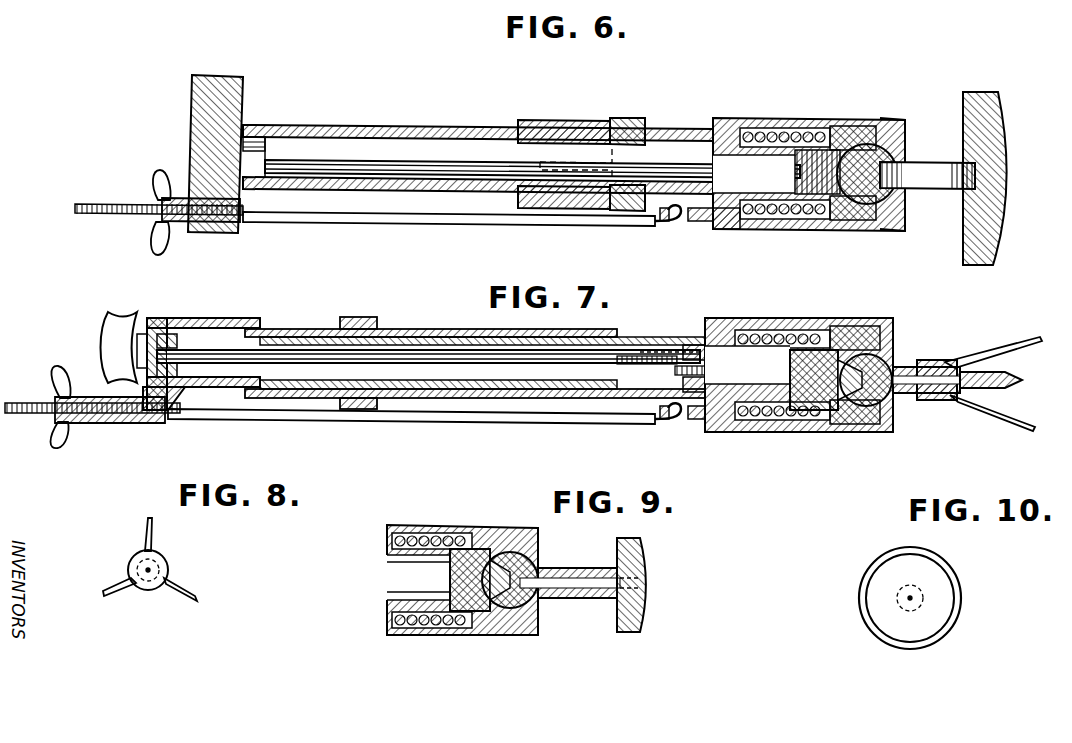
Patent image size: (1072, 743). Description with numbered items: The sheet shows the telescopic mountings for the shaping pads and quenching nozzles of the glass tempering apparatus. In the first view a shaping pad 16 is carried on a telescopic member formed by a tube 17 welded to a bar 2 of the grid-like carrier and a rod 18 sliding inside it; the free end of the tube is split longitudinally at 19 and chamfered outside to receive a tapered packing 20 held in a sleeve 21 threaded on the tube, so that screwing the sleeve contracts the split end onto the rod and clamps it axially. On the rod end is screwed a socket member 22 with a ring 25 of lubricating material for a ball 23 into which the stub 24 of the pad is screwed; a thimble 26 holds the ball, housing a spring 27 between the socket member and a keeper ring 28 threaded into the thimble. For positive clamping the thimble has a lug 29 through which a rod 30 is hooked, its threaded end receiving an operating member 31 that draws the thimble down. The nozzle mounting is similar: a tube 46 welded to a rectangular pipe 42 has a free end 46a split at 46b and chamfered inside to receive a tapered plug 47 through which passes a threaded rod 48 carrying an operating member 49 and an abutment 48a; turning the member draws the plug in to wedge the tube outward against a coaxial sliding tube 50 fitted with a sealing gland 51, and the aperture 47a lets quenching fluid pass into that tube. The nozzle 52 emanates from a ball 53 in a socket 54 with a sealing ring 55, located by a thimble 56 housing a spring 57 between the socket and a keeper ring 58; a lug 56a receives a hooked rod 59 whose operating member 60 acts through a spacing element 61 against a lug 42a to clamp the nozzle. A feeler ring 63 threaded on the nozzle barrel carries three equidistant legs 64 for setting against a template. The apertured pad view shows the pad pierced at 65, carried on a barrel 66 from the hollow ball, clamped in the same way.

In FIG. 6, the bar 2 is at (233, 74).
In FIG. 6, the shaping pad 16 is at (1004, 123).
In FIG. 9, the shaping pad 16 is at (645, 562).
In FIG. 10, the shaping pad 16 is at (945, 584).
In FIG. 6, the tube 17 is at (406, 126).
In FIG. 6, the rod 18 is at (466, 146).
In FIG. 6, the split 19 is at (577, 152).
In FIG. 6, the tapered packing 20 is at (614, 135).
In FIG. 6, the sleeve 21 is at (534, 120).
In FIG. 6, the socket member 22 is at (840, 128).
In FIG. 6, the ball 23 is at (905, 194).
In FIG. 6, the stub 24 is at (934, 172).
In FIG. 6, the ring of lubricating material 25 is at (873, 130).
In FIG. 6, the thimble 26 is at (905, 128).
In FIG. 6, the spring 27 is at (784, 126).
In FIG. 6, the keeper ring 28 is at (723, 119).
In FIG. 6, the lug 29 is at (716, 229).
In FIG. 6, the rod 30 is at (645, 229).
In FIG. 6, the operating member 31 is at (163, 228).
In FIG. 7, the pipe 42 is at (237, 320).
In FIG. 7, the lug 42a is at (170, 411).
In FIG. 7, the tube 46 is at (302, 330).
In FIG. 7, the free end 46a is at (697, 344).
In FIG. 7, the longitudinal split 46b is at (630, 345).
In FIG. 7, the tapered plug 47 is at (686, 346).
In FIG. 7, the aperture 47a is at (694, 393).
In FIG. 7, the rod 48 is at (432, 352).
In FIG. 7, the abutment 48a is at (160, 340).
In FIG. 7, the operating member 49 is at (118, 318).
In FIG. 7, the tube 50 is at (400, 336).
In FIG. 7, the sealing gland 51 is at (358, 316).
In FIG. 7, the nozzle 52 is at (1018, 379).
In FIG. 8, the nozzle 52 is at (131, 563).
In FIG. 7, the ball 53 is at (893, 362).
In FIG. 9, the ball 53 is at (541, 552).
In FIG. 7, the socket 54 is at (858, 342).
In FIG. 9, the socket 54 is at (500, 545).
In FIG. 7, the sealing ring 55 is at (846, 432).
In FIG. 7, the thimble 56 is at (833, 324).
In FIG. 9, the thimble 56 is at (471, 528).
In FIG. 7, the lug 56a is at (657, 426).
In FIG. 7, the spring 57 is at (782, 421).
In FIG. 9, the spring 57 is at (420, 534).
In FIG. 7, the keeper ring 58 is at (726, 322).
In FIG. 7, the rod 59 is at (495, 426).
In FIG. 7, the operating member 60 is at (58, 438).
In FIG. 7, the spacing element 61 is at (115, 424).
In FIG. 7, the ring 63 is at (925, 401).
In FIG. 7, the legs 64 is at (990, 352).
In FIG. 8, the legs 64 is at (179, 582).
In FIG. 9, the aperture 65 is at (630, 585).
In FIG. 10, the aperture 65 is at (913, 598).
In FIG. 9, the barrel 66 is at (579, 569).